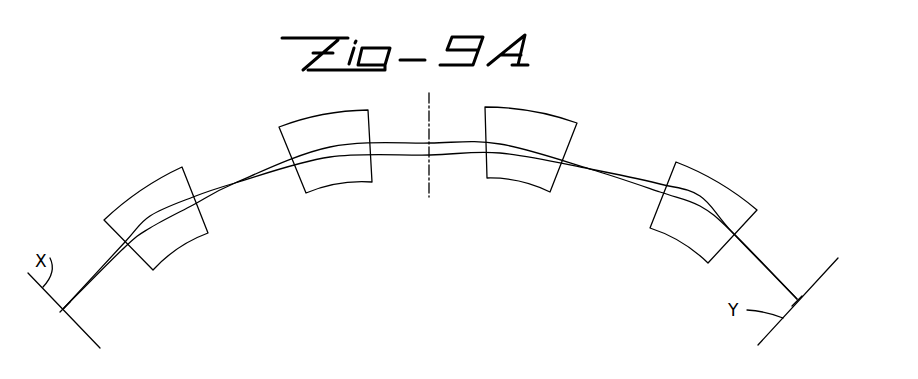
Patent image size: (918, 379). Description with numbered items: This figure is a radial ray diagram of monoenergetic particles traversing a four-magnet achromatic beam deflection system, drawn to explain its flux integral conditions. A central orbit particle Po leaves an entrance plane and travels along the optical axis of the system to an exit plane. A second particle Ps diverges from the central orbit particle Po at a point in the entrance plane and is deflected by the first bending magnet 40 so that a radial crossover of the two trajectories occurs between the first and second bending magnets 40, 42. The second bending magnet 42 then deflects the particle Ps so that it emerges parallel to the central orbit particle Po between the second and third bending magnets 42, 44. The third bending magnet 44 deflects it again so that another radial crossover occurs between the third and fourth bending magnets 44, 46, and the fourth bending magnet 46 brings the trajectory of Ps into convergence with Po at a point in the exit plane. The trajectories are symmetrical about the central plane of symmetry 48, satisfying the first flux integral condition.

The first bending magnet 40 is at (157, 185).
The second bending magnet 42 is at (308, 120).
The third bending magnet 44 is at (540, 118).
The fourth bending magnet 46 is at (705, 175).
The central plane of symmetry 48 is at (428, 97).
The second particle Ps is at (278, 173).
The central orbit particle Po is at (213, 192).